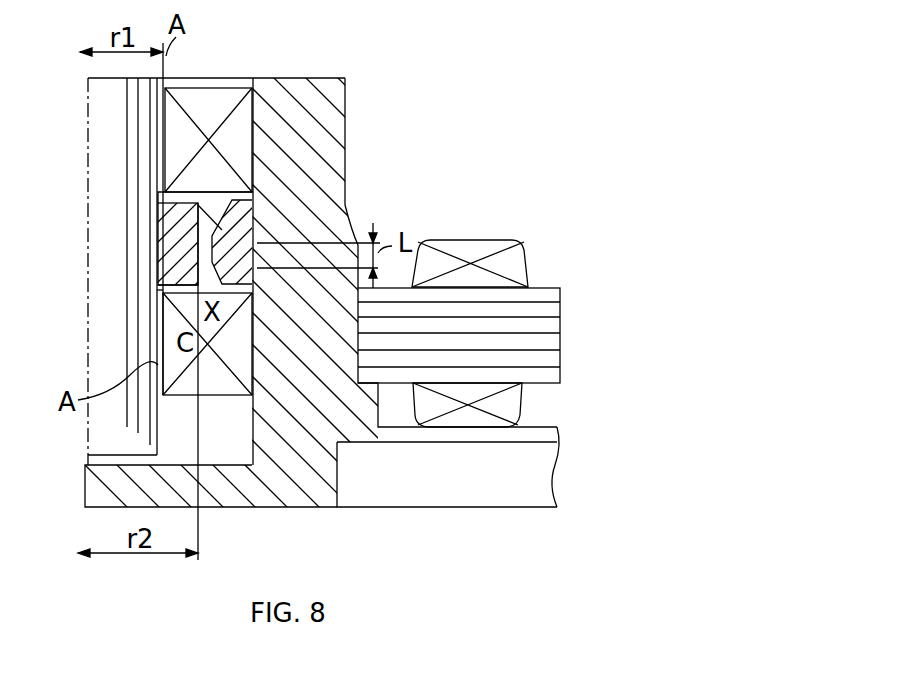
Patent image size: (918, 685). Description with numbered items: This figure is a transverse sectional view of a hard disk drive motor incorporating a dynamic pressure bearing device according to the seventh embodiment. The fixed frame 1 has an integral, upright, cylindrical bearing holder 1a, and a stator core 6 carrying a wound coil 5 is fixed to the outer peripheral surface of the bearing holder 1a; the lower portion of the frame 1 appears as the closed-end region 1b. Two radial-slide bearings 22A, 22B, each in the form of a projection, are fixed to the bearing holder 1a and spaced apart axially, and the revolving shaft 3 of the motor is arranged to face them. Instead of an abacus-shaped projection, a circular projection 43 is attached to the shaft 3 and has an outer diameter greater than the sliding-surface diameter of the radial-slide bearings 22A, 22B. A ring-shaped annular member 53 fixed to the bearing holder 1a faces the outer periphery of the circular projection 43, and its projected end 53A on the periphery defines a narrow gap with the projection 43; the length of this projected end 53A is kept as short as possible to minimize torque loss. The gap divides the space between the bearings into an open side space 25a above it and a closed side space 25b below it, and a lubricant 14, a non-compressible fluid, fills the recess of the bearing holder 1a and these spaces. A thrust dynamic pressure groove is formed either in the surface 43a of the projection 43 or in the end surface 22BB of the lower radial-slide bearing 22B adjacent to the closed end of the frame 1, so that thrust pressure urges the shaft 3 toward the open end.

The frame 1 is at (315, 512).
The bearing holder 1a is at (357, 245).
The bottom plate of housing 1b is at (95, 487).
The revolving shaft 3 is at (90, 205).
The coil 5 is at (512, 263).
The stator core 6 is at (553, 316).
The lubricant 14 is at (168, 205).
The radial-slide bearing 22A is at (208, 100).
The radial-slide bearing 22B is at (167, 343).
The end of the radial-slide bearing 22BB is at (188, 330).
The open side space 25a is at (228, 200).
The closed side space 25b is at (218, 290).
The circular projection 43 is at (165, 255).
The surface of the projection 43a is at (163, 313).
The annular member 53 is at (238, 220).
The projected end 53A is at (198, 205).